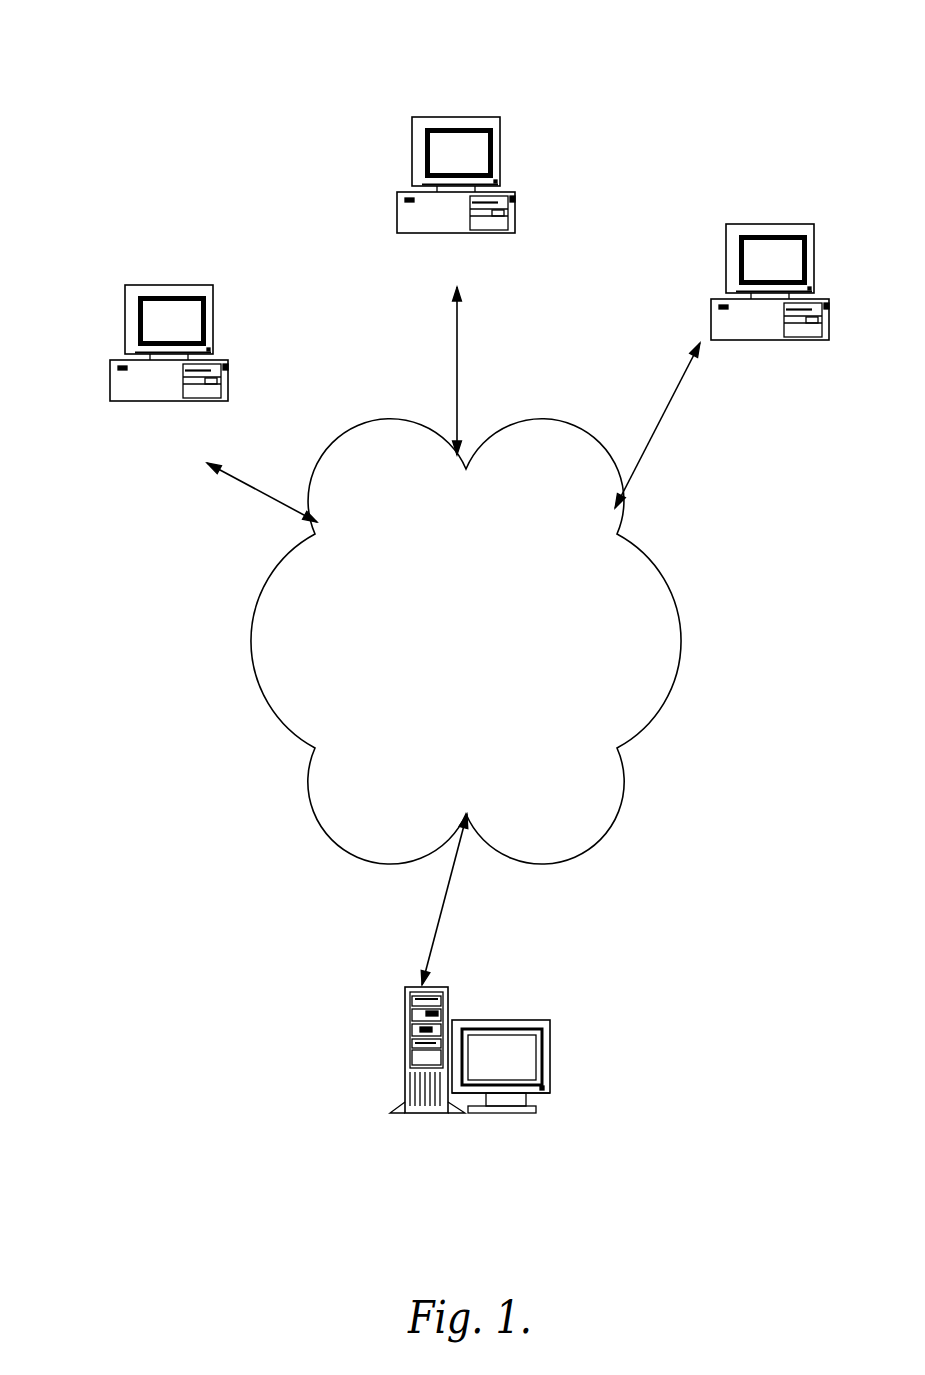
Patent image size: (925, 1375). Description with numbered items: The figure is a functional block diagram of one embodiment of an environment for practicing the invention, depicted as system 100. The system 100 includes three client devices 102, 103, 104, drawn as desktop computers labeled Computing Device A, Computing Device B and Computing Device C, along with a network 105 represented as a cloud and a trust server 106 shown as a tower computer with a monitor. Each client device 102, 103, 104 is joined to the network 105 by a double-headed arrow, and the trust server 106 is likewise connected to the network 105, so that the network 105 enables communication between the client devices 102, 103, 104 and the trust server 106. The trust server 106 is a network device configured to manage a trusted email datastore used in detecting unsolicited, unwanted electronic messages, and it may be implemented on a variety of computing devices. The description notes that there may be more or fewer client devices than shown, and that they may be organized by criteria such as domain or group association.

The system 100 is at (633, 100).
The client device 102 is at (124, 320).
The client device 103 is at (411, 150).
The client device 104 is at (725, 258).
The network 105 is at (682, 638).
The trust server 106 is at (404, 1030).